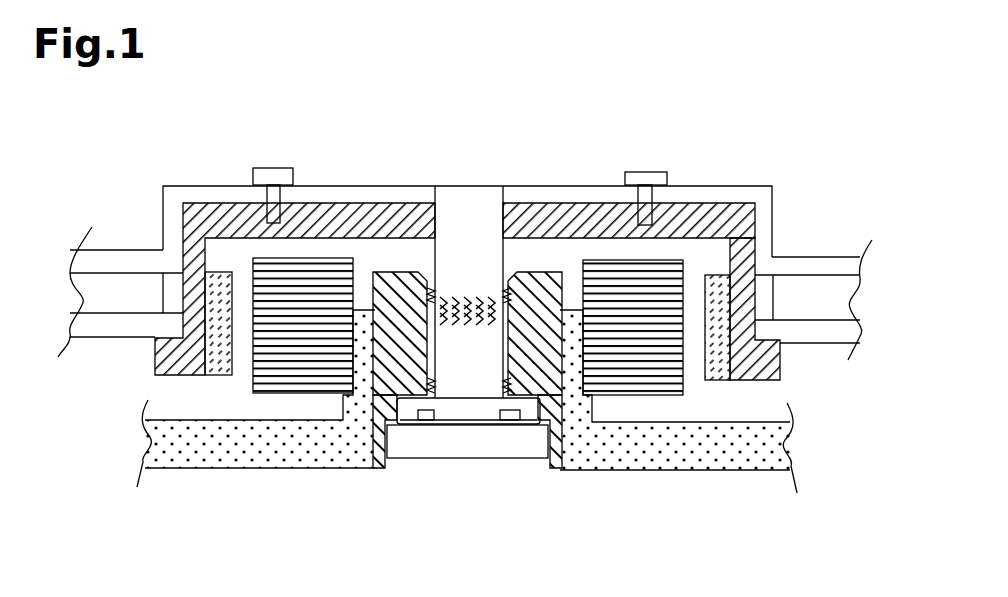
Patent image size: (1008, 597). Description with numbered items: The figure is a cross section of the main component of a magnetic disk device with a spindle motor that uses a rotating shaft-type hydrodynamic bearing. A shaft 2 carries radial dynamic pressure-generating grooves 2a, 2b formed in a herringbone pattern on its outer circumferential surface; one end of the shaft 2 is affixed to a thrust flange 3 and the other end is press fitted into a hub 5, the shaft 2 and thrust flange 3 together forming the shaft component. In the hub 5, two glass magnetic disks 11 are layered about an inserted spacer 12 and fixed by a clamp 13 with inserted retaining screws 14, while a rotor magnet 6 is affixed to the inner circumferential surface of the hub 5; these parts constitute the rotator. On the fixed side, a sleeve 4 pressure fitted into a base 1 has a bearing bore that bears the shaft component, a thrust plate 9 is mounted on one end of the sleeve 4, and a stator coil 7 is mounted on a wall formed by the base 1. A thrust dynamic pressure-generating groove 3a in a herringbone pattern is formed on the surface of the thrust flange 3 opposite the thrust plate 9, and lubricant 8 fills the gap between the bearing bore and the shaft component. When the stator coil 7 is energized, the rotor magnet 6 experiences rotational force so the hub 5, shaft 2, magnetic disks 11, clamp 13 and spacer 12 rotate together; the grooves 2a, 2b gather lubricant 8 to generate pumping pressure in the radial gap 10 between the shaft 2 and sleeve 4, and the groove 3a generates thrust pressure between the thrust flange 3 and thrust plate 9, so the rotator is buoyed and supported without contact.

The base 1 is at (663, 453).
The shaft 2 is at (477, 235).
The radial dynamic pressure-generating groove 2a is at (468, 300).
The radial dynamic pressure-generating groove 2b is at (462, 335).
The thrust flange 3 is at (452, 410).
The thrust dynamic pressure-generating groove 3a is at (512, 420).
The sleeve 4 is at (400, 285).
The hub 5 is at (683, 215).
The rotor magnet 6 is at (780, 367).
The stator coil 7 is at (317, 283).
The lubricant 8 is at (373, 433).
The thrust plate 9 is at (473, 457).
The radial gap 10 is at (432, 312).
The magnetic disk 11 is at (150, 328).
The spacer 12 is at (760, 302).
The clamp 13 is at (570, 188).
The retaining screw 14 is at (663, 175).